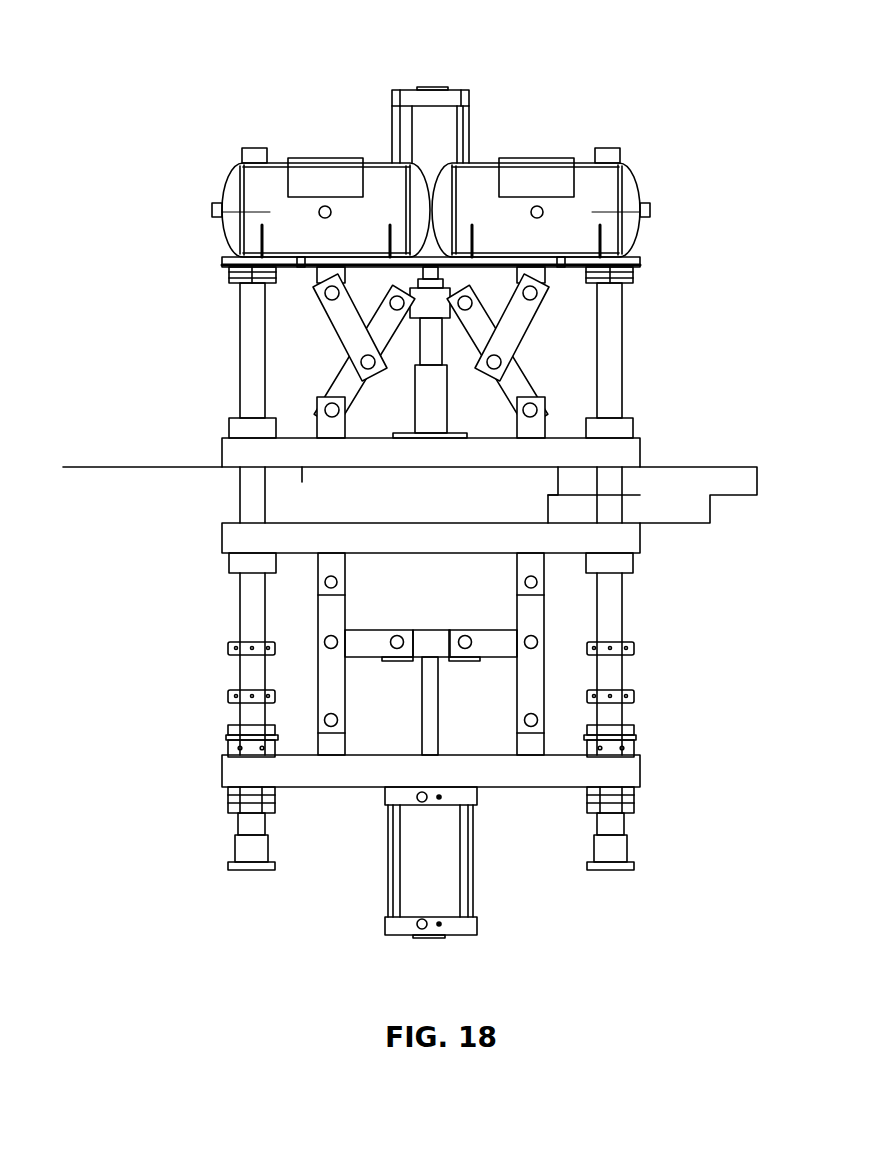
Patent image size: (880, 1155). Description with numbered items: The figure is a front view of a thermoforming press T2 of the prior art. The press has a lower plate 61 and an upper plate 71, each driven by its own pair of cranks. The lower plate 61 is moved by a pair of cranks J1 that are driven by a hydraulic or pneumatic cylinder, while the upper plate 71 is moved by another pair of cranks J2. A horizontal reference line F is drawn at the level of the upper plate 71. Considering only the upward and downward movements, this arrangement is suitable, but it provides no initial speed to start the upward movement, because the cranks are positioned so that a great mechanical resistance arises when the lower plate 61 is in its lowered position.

The thermoforming press T2 is at (656, 108).
The cranks J2 is at (355, 353).
The upper plate 71 is at (610, 453).
The floor F is at (168, 467).
The lower plate 61 is at (613, 540).
The cranks J1 is at (318, 645).